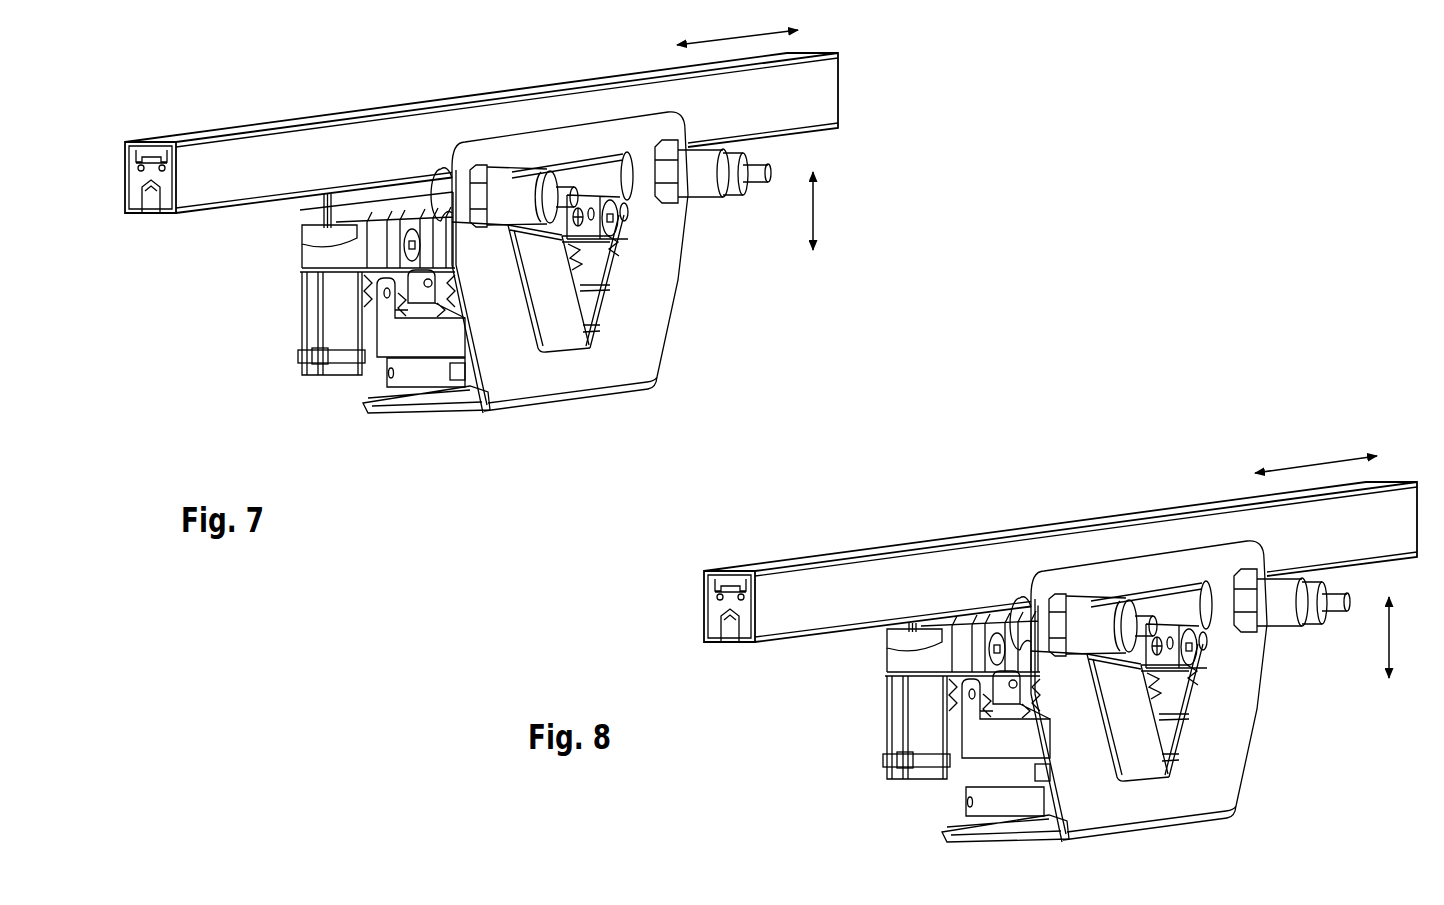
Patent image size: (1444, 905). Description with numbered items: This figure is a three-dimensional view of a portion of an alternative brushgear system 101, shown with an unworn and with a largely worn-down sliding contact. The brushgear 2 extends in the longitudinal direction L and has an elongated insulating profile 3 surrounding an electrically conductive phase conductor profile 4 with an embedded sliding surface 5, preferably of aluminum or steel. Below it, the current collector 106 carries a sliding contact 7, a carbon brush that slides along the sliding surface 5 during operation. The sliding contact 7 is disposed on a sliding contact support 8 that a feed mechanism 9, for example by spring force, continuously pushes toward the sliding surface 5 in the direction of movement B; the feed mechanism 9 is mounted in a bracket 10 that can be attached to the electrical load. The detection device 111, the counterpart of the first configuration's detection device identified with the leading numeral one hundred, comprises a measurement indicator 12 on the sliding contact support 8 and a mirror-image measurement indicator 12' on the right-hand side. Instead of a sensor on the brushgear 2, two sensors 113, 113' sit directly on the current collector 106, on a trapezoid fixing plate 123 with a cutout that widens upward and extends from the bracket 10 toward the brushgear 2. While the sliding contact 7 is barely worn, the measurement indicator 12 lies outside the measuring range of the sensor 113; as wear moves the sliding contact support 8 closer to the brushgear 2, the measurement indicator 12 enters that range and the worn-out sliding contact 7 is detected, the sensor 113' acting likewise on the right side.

In FIG. 7, the brushgear 2 is at (232, 126).
In FIG. 8, the brushgear 2 is at (1060, 547).
In FIG. 7, the insulating profile 3 is at (141, 141).
In FIG. 8, the insulating profile 3 is at (723, 557).
In FIG. 7, the phase conductor profile 4 is at (137, 178).
In FIG. 8, the phase conductor profile 4 is at (685, 592).
In FIG. 7, the sliding surface 5 is at (143, 192).
In FIG. 8, the sliding surface 5 is at (718, 659).
In FIG. 7, the sliding contact 7 is at (320, 212).
In FIG. 8, the sliding contact 7 is at (852, 648).
In FIG. 7, the sliding contact support 8 is at (307, 296).
In FIG. 8, the sliding contact support 8 is at (914, 687).
In FIG. 7, the feed mechanism 9 is at (395, 352).
In FIG. 8, the feed mechanism 9 is at (983, 754).
In FIG. 7, the bracket 10 is at (391, 410).
In FIG. 8, the bracket 10 is at (1003, 855).
In FIG. 7, the measurement indicator 12 is at (395, 202).
In FIG. 8, the measurement indicator 12 is at (984, 614).
In FIG. 7, the second measurement indicator 12' is at (670, 240).
In FIG. 8, the second measurement indicator 12' is at (1247, 658).
In FIG. 7, the brushgear system 101 is at (190, 388).
In FIG. 8, the brushgear system 101 is at (1038, 629).
In FIG. 7, the current collector 106 is at (700, 360).
In FIG. 8, the current collector 106 is at (1213, 719).
In FIG. 7, the carrier 111 is at (565, 118).
In FIG. 8, the carrier 111 is at (1149, 625).
In FIG. 7, the sensor 113 is at (488, 141).
In FIG. 8, the sensor 113 is at (1062, 570).
In FIG. 7, the second sensor 113' is at (692, 115).
In FIG. 8, the second sensor 113' is at (1272, 544).
In FIG. 7, the fixing plate 123 is at (652, 290).
In FIG. 8, the fixing plate 123 is at (1260, 715).